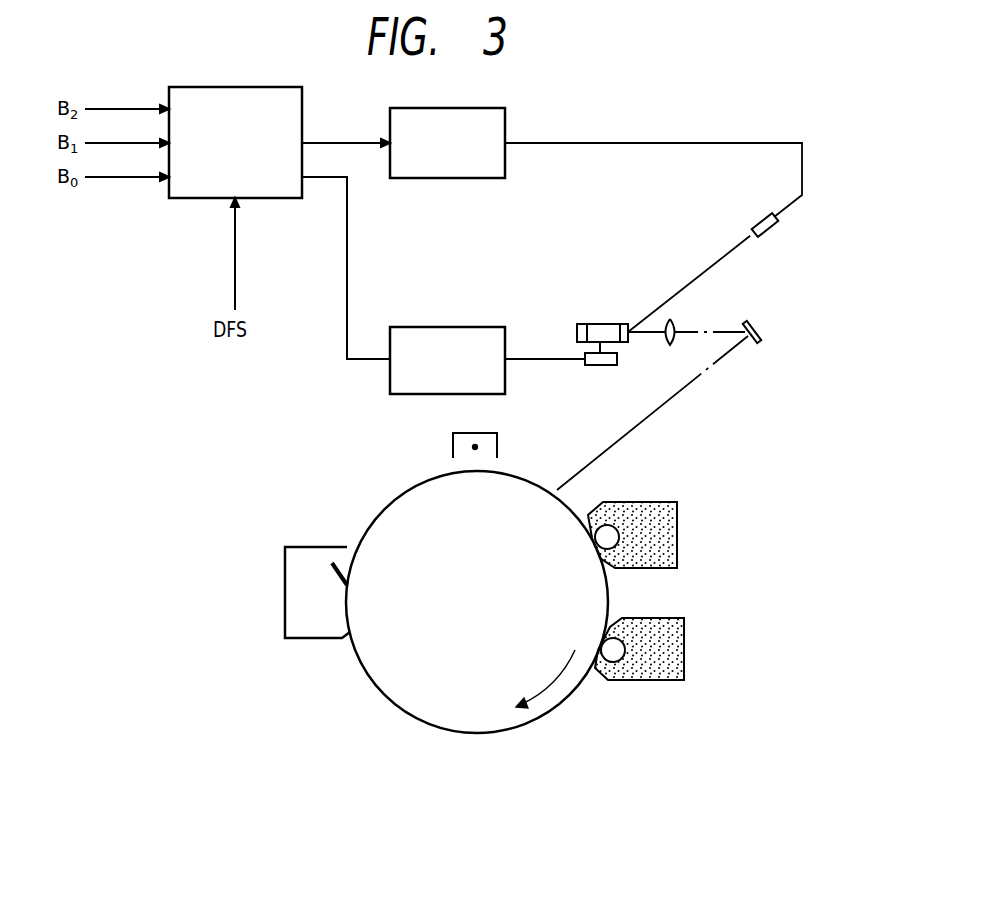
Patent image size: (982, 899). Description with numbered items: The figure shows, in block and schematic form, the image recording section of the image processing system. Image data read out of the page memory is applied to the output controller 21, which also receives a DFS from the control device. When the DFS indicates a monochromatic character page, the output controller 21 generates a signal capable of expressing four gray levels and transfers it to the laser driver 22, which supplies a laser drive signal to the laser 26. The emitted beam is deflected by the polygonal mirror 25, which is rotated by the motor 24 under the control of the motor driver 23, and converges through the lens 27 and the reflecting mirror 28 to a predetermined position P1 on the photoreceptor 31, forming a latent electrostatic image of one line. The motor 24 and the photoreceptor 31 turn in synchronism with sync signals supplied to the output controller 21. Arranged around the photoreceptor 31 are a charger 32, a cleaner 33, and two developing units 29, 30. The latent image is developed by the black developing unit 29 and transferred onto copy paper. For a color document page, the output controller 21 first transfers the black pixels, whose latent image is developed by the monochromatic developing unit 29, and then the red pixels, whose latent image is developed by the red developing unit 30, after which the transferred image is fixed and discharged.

The output controller 21 is at (193, 200).
The laser driver 22 is at (482, 180).
The motor driver 23 is at (480, 327).
The motor 24 is at (612, 366).
The polygonal mirror 25 is at (608, 324).
The laser 26 is at (765, 218).
The lens 27 is at (675, 322).
The reflecting mirror 28 is at (764, 326).
The developing unit 29 is at (678, 528).
The developing unit 30 is at (685, 645).
The photoreceptor 31 is at (512, 468).
The charger 32 is at (453, 440).
The cleaner 33 is at (310, 547).
The predetermined position P1 is at (554, 475).